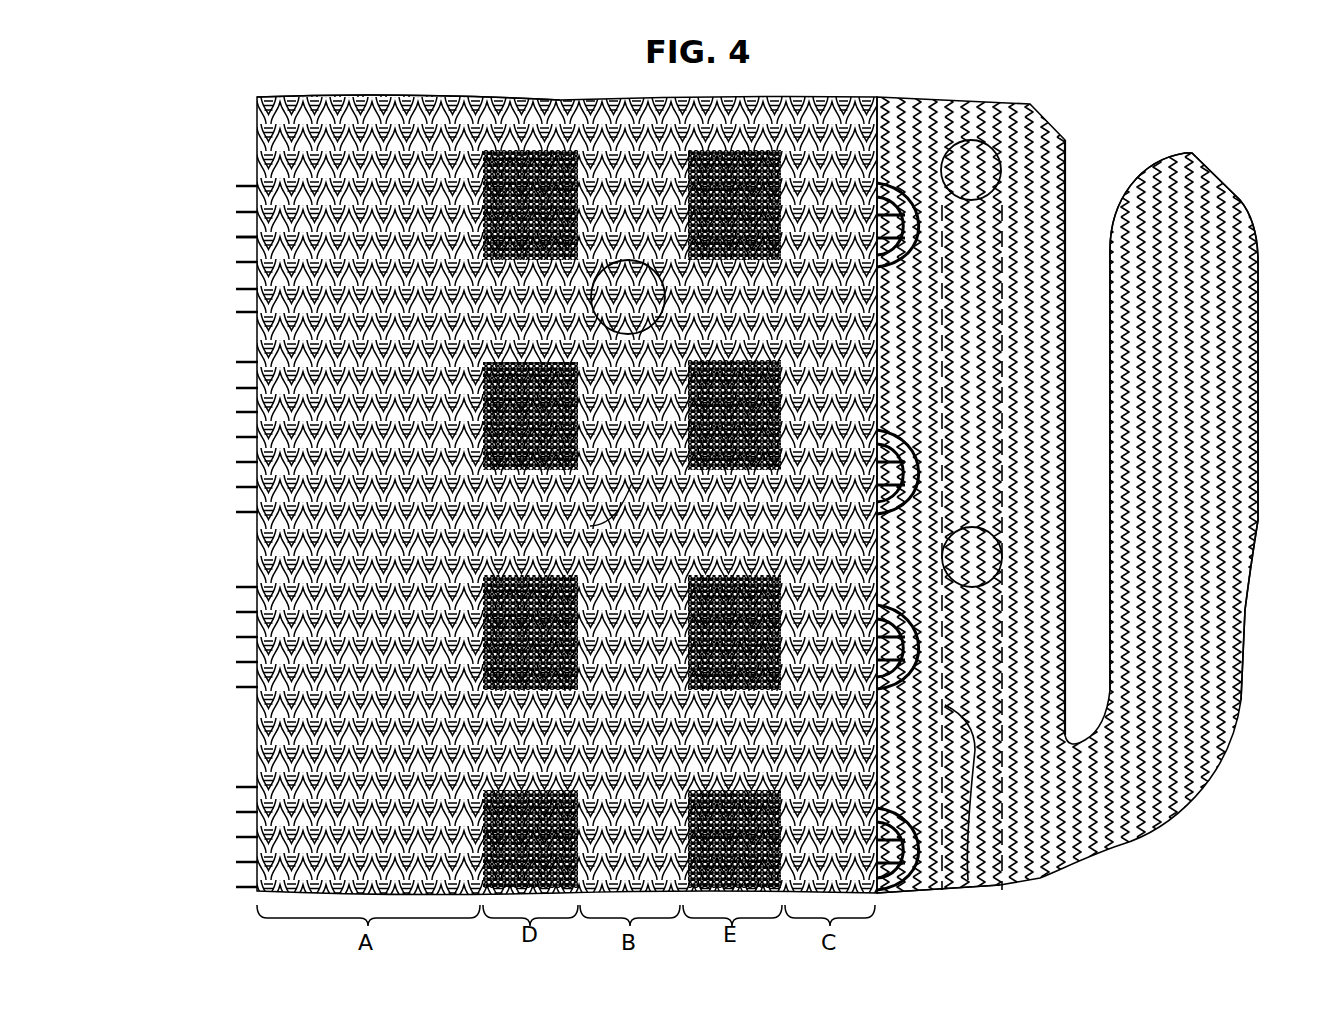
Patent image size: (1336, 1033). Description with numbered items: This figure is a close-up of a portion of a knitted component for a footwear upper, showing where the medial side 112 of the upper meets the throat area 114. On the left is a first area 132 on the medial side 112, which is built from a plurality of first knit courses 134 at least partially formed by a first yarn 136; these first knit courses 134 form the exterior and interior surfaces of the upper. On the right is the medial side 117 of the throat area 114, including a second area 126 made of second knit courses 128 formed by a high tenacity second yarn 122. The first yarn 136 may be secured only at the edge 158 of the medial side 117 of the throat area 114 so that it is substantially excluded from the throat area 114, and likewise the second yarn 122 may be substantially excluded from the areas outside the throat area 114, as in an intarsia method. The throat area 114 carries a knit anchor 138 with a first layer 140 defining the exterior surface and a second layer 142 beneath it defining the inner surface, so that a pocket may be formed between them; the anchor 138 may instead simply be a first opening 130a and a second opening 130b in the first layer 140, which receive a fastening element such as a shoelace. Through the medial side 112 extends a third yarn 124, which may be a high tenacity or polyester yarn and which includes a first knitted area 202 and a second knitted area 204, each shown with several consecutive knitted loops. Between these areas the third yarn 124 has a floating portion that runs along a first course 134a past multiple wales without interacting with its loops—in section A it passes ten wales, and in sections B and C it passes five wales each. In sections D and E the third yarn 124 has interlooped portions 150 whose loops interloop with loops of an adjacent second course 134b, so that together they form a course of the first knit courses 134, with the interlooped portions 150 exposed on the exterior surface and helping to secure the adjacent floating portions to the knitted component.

The medial side 112 is at (432, 104).
The throat area 114 is at (1140, 805).
The medial side of the throat area 117 is at (1022, 130).
The second yarn 122 is at (1050, 870).
The third yarn 124 is at (775, 150).
The second area 126 is at (925, 298).
The second knit courses 128 is at (968, 880).
The first opening 130a is at (1000, 574).
The second opening 130b is at (972, 141).
The first area 132 is at (630, 260).
The first knit courses 134 is at (645, 185).
The first course 134a is at (255, 165).
The second course 134b is at (254, 242).
The first yarn 136 is at (302, 100).
The knit anchor 138 is at (1002, 477).
The first layer 140 is at (977, 400).
The second layer 142 is at (1075, 358).
The interlooped portion 150 is at (506, 145).
The edge 158 is at (895, 135).
The first knitted area 202 is at (475, 388).
The second knitted area 204 is at (803, 330).